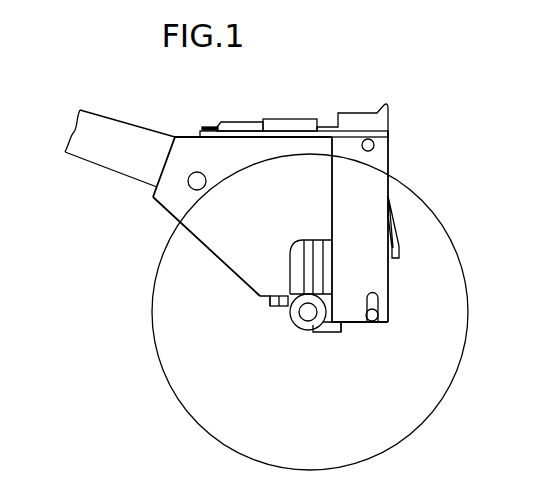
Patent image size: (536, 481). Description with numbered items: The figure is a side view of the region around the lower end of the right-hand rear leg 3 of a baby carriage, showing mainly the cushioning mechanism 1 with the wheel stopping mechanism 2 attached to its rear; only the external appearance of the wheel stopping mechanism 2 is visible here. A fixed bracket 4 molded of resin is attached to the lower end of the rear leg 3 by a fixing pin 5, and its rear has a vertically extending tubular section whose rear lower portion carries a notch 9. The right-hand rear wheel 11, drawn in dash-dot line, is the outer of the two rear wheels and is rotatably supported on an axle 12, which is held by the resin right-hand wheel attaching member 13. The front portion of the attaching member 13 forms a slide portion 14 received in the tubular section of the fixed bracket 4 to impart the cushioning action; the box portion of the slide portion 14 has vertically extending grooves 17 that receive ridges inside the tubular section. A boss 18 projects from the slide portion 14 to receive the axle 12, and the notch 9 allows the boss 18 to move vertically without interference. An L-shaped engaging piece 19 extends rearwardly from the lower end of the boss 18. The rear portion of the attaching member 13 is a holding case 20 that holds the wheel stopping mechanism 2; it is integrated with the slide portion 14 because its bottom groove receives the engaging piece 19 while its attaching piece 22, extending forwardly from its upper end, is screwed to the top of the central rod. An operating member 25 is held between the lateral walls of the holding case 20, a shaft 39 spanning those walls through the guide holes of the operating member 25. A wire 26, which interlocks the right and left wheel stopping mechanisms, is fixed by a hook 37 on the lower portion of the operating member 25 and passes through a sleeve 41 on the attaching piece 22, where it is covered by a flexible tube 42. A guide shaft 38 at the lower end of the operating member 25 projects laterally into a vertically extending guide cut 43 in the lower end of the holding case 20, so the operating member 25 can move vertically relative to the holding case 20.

The cushioning mechanism 1 is at (261, 303).
The wheel stopping mechanism 2 is at (397, 308).
The right-hand rear leg 3 is at (98, 123).
The fixed bracket 4 is at (168, 217).
The fixing pin 5 is at (188, 183).
The notch 9 is at (290, 263).
The right-hand rear wheel 11 is at (420, 427).
The axle 12 is at (303, 322).
The right-hand wheel attaching member 13 is at (336, 340).
The slide portion 14 is at (287, 307).
The vertically extending grooves 17 is at (308, 272).
The boss 18 is at (311, 331).
The L-shaped engaging piece 19 is at (343, 328).
The holding case 20 is at (377, 187).
The attaching piece 22 is at (303, 133).
The operating member 25 is at (362, 116).
The wire 26 is at (206, 127).
The hook 37 is at (400, 240).
The guide shaft 38 is at (376, 321).
The shaft 39 is at (374, 143).
The sleeve 41 is at (278, 121).
The flexible tube 42 is at (240, 124).
The guide cut 43 is at (383, 296).